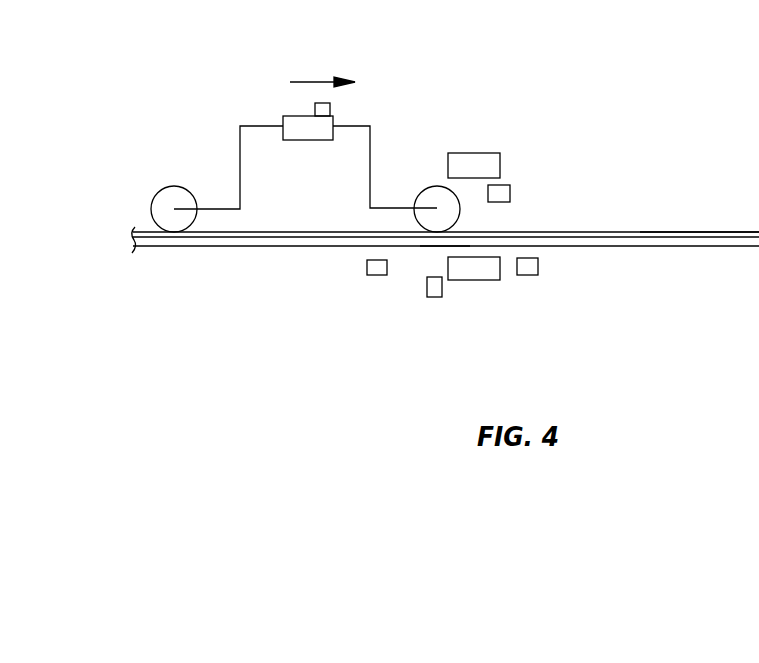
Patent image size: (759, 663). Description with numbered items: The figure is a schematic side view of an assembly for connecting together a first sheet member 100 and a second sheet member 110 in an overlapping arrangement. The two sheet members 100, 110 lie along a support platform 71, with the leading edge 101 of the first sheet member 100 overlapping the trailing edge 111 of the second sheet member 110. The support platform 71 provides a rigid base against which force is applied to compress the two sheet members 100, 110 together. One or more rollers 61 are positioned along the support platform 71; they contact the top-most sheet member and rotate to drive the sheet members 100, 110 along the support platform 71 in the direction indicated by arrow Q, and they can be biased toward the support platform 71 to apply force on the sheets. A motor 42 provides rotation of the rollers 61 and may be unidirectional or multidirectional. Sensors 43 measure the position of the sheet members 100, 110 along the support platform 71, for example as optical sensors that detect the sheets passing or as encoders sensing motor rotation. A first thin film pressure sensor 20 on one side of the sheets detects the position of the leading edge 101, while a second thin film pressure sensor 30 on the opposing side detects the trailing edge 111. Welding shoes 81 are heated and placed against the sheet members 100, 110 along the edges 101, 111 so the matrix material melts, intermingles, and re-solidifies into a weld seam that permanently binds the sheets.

The arrow Q is at (312, 82).
The first thin film pressure sensor 20 is at (500, 165).
The second thin film pressure sensor 30 is at (492, 272).
The motor 42 is at (293, 122).
The sensor 43 is at (328, 110).
The roller 61 is at (165, 198).
The support platform 71 is at (218, 248).
The welding shoe 81 is at (510, 193).
The first sheet member 100 is at (302, 232).
The leading edge 101 is at (502, 230).
The second sheet member 110 is at (672, 232).
The trailing edge 111 is at (445, 228).